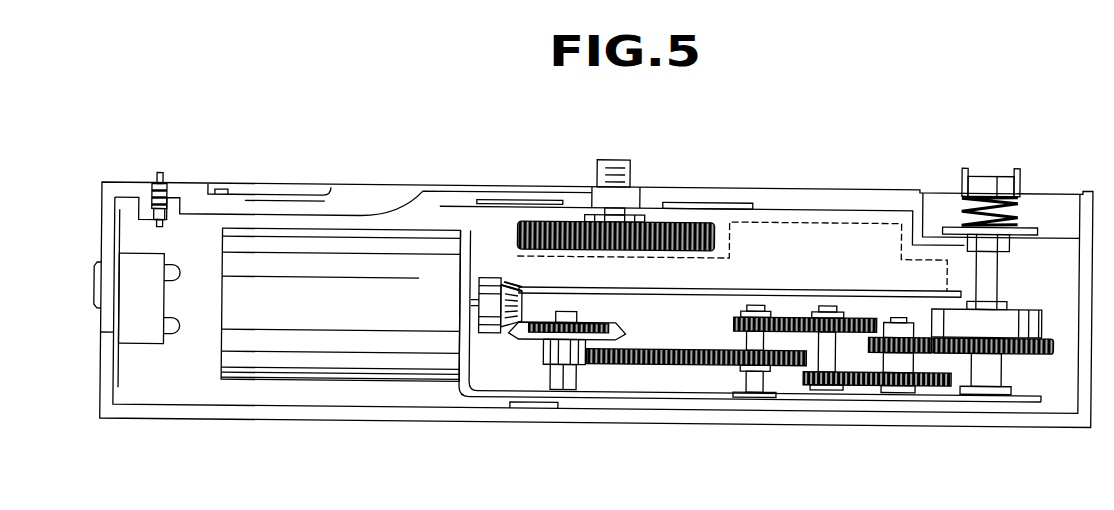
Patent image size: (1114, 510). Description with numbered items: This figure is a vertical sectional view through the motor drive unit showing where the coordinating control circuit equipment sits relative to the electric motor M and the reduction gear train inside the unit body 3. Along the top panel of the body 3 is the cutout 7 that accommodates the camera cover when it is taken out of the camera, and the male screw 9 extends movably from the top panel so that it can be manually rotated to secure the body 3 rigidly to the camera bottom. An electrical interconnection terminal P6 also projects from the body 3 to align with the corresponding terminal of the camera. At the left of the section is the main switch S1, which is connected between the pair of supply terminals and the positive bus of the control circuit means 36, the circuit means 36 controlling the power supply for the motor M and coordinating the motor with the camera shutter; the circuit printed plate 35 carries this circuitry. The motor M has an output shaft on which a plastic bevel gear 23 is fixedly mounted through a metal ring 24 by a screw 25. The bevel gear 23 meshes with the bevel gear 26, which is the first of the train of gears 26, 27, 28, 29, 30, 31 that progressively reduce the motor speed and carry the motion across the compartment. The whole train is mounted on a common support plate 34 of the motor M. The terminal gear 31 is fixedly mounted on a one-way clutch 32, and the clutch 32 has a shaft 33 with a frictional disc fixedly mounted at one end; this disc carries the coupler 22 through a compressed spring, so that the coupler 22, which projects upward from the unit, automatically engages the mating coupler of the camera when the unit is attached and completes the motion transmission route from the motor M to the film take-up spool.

The body 3 is at (740, 421).
The cutout 7 is at (322, 190).
The electrical interconnection terminal P6 is at (160, 171).
The main switch S1 is at (108, 290).
The electric motor M is at (358, 343).
The male screw 9 is at (617, 155).
The circuit means 36 is at (878, 218).
The circuit printed plate 35 is at (822, 283).
The metal ring 24 is at (497, 330).
The screw 25 is at (493, 278).
The bevel gear 23 is at (520, 281).
The bevel gear 26 is at (607, 318).
The gear 27 is at (612, 375).
The common support plate 34 is at (690, 393).
The gear 28 is at (797, 372).
The gear 29 is at (862, 311).
The gear 30 is at (925, 386).
The gear 31 is at (1043, 346).
The one-way clutch 32 is at (1043, 318).
The shaft 33 is at (992, 259).
The coupler 22 is at (990, 168).